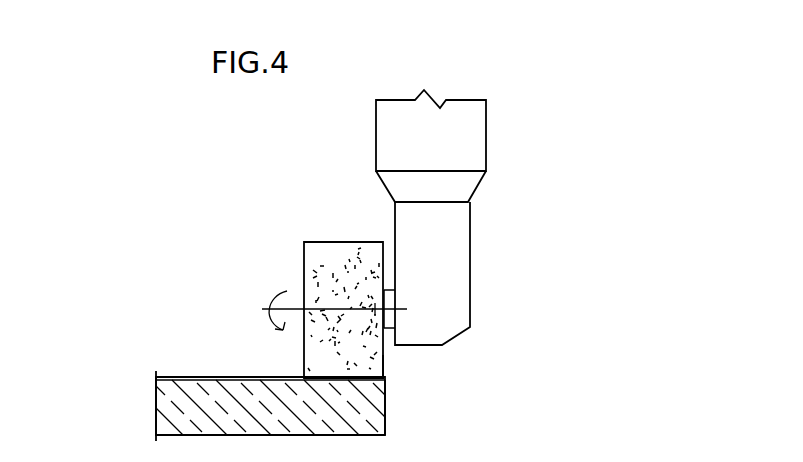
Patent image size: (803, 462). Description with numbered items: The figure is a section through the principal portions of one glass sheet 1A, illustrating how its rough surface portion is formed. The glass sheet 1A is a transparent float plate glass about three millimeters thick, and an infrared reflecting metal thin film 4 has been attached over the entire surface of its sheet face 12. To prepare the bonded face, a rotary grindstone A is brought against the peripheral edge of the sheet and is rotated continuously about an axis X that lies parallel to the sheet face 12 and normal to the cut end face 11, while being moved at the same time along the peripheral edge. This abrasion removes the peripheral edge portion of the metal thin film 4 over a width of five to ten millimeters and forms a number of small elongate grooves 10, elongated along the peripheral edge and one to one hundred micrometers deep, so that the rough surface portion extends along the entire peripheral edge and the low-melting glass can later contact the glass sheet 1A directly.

The glass sheet 1A is at (165, 410).
The infrared reflecting metal thin film 4 is at (197, 376).
The sheet face 12 is at (177, 375).
The small elongate groove 10 is at (386, 367).
The end face 11 is at (386, 415).
The rotary grindstone A is at (333, 250).
The axis X is at (323, 310).